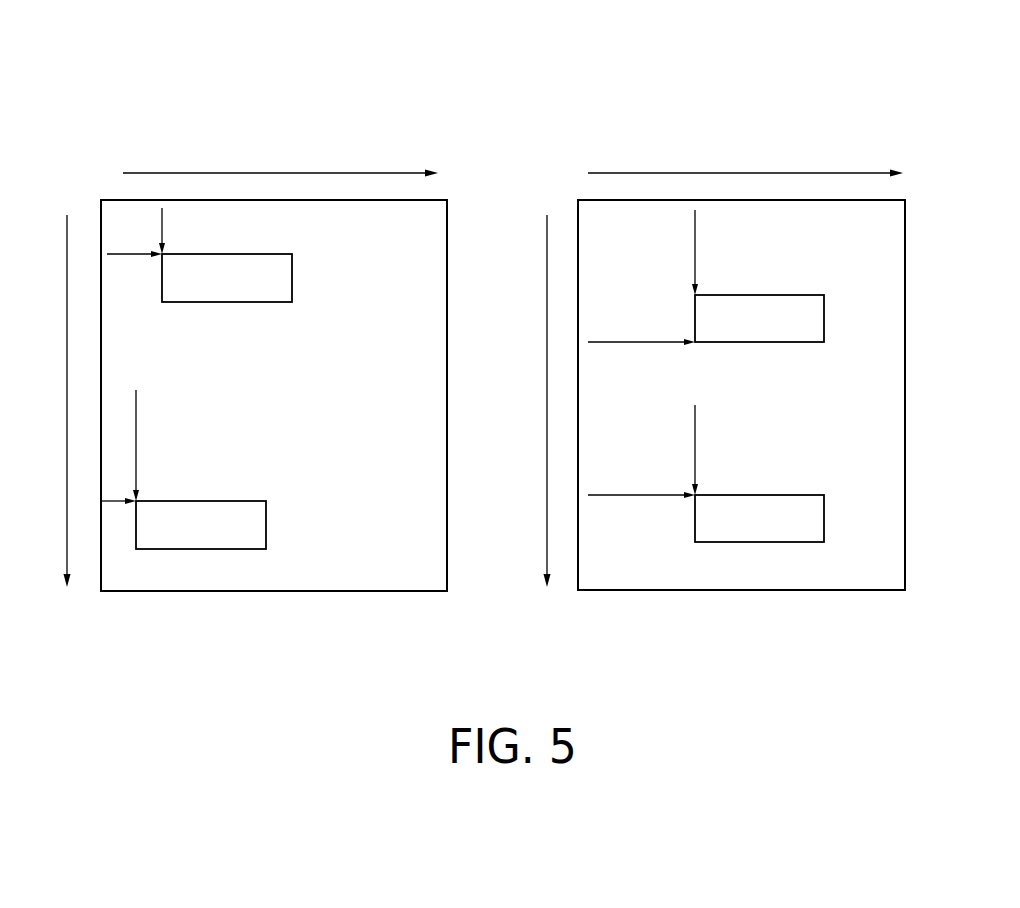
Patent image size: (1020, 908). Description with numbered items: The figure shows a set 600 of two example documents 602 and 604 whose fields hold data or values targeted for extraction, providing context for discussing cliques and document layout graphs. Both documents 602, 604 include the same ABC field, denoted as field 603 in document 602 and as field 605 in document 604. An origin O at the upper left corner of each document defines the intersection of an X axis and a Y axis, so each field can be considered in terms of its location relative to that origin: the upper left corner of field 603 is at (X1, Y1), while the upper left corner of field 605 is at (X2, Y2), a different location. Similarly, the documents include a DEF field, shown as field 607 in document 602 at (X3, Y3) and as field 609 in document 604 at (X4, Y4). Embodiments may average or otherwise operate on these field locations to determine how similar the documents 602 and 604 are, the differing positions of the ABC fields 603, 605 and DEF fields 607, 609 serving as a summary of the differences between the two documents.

The set of two documents 600 is at (740, 76).
The document 602 is at (266, 591).
The ABC field 603 is at (252, 302).
The document 604 is at (747, 590).
The ABC field 605 is at (802, 342).
The DEF field 607 is at (266, 518).
The DEF field 609 is at (813, 495).